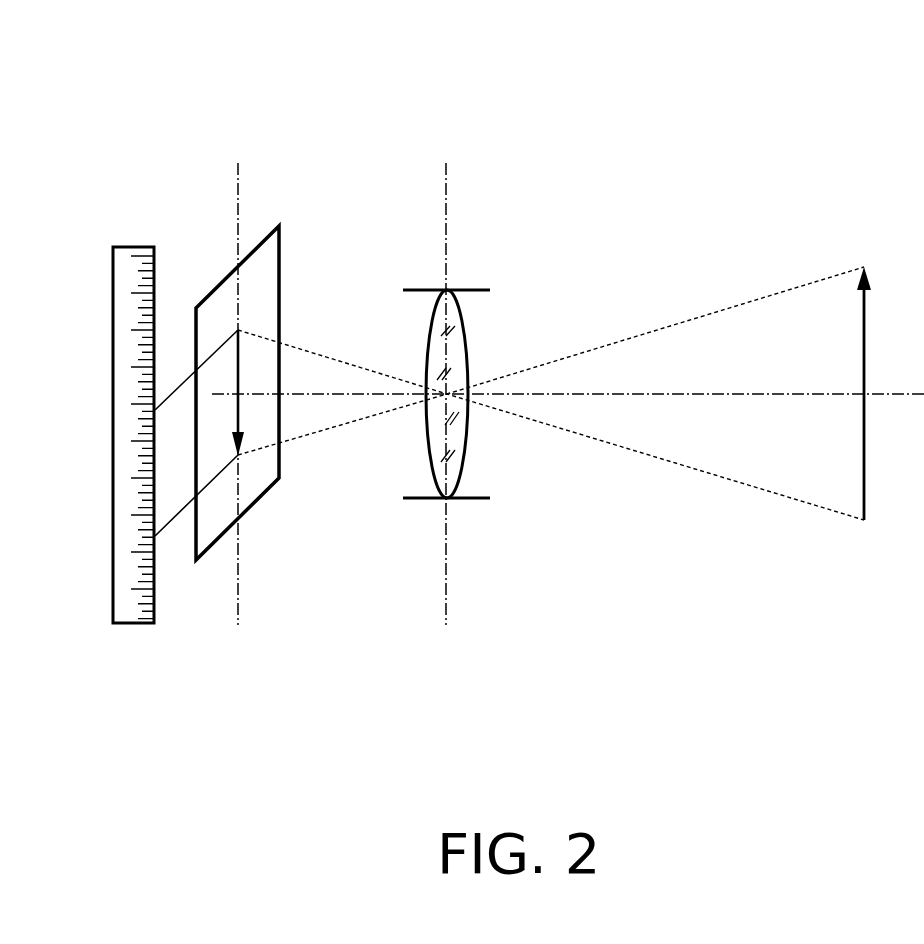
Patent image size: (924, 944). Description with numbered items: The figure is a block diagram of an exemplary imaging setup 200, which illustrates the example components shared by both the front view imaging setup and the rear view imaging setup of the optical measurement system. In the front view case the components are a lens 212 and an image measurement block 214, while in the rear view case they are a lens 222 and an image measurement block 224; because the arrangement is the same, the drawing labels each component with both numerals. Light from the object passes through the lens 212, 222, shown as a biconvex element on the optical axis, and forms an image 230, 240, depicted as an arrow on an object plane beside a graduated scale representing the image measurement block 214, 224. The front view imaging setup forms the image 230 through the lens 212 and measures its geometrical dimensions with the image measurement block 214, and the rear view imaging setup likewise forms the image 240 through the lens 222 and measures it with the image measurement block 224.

The imaging setup 200 is at (93, 78).
The lens 212 is at (516, 372).
The lens 222 is at (446, 316).
The image measurement block 214 is at (225, 456).
The image measurement block 224 is at (134, 601).
The image 230 is at (268, 393).
The image 240 is at (239, 373).